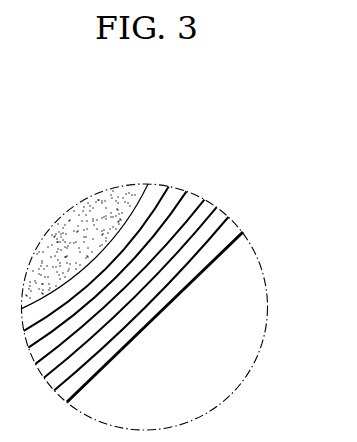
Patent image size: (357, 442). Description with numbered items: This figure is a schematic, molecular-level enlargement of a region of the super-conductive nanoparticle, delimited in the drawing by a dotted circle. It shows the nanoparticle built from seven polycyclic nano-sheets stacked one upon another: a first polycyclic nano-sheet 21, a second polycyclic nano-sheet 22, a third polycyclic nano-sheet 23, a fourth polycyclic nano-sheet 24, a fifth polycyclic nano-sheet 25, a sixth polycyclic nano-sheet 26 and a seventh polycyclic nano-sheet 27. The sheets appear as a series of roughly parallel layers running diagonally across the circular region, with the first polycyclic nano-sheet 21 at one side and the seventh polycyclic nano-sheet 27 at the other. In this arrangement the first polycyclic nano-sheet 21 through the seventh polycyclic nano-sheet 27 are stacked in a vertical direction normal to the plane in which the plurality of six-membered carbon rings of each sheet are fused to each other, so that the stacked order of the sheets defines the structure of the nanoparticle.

The first polycyclic nano-sheet 21 is at (243, 232).
The second polycyclic nano-sheet 22 is at (228, 217).
The third polycyclic nano-sheet 23 is at (216, 207).
The fourth polycyclic nano-sheet 24 is at (204, 200).
The fifth polycyclic nano-sheet 25 is at (186, 191).
The sixth polycyclic nano-sheet 26 is at (169, 186).
The seventh polycyclic nano-sheet 27 is at (148, 185).